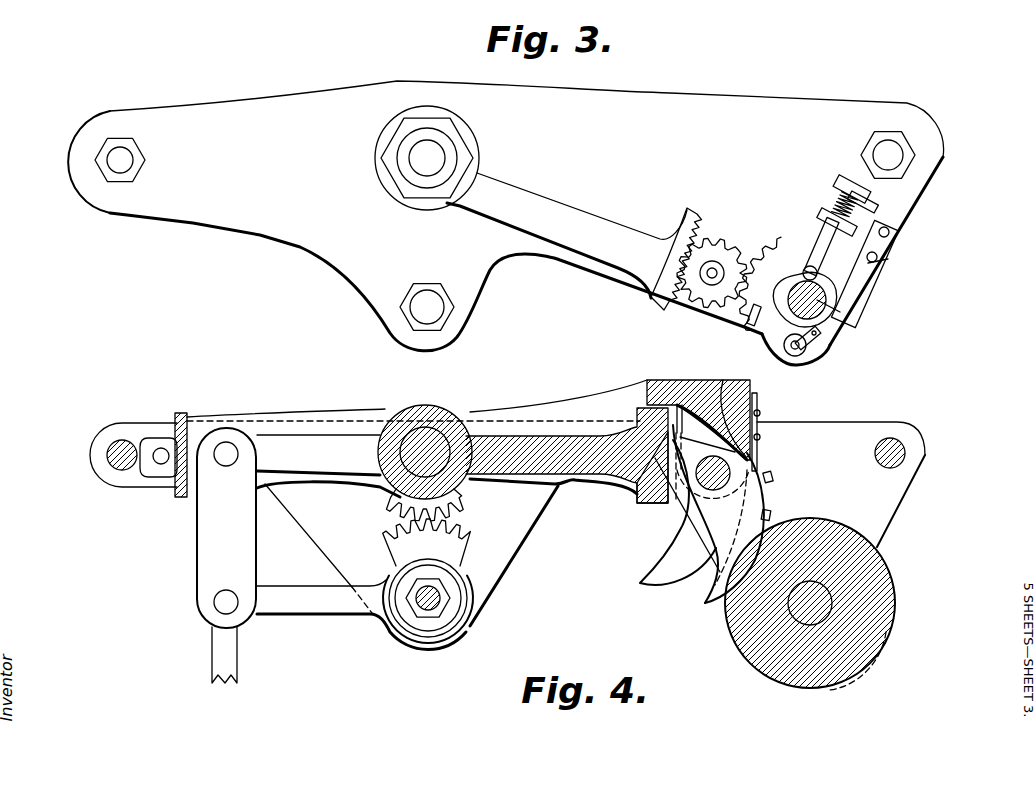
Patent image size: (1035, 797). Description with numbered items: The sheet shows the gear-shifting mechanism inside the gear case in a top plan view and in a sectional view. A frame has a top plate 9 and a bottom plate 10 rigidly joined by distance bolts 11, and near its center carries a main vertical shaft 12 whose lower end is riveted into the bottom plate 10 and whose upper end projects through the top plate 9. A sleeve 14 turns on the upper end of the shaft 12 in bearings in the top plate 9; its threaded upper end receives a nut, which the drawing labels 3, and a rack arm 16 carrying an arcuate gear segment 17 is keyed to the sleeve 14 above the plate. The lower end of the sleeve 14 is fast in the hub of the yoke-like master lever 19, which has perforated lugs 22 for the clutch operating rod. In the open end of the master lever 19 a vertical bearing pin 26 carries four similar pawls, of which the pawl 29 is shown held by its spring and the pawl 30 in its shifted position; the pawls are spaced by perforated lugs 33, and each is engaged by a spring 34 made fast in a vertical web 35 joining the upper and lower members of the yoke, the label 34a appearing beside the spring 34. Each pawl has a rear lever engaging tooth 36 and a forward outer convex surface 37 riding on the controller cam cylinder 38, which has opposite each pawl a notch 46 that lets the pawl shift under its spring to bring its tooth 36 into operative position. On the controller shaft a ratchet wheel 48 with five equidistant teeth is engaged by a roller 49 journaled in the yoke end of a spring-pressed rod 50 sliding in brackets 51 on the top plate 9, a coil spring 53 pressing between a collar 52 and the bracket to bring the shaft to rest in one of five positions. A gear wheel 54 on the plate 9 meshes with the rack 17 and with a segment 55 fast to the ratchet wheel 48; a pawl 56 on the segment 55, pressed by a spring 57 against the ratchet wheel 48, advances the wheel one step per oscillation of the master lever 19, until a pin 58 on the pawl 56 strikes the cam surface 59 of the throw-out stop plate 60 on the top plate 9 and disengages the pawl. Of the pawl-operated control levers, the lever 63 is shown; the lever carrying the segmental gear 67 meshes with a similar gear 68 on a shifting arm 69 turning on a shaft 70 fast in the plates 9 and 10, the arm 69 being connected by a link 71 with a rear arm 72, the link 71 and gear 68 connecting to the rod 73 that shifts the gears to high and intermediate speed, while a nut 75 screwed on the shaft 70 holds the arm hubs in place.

In FIG. 3, the top plate 9 is at (237, 217).
In FIG. 3, the distance bolts 11 is at (118, 165).
In FIG. 4, the distance bolts 11 is at (120, 463).
In FIG. 3, the sleeve 14 is at (410, 138).
In FIG. 3, the nut 3 is at (387, 168).
In FIG. 3, the main vertical shaft 12 is at (440, 155).
In FIG. 4, the main vertical shaft 12 is at (430, 433).
In FIG. 3, the rack arm 16 is at (575, 208).
In FIG. 3, the arcuate gear segment 17 is at (698, 212).
In FIG. 3, the shaft 70 is at (433, 307).
In FIG. 4, the shaft 70 is at (437, 605).
In FIG. 3, the gear wheel 54 is at (722, 246).
In FIG. 3, the ratchet wheel 48 is at (820, 288).
In FIG. 3, the roller 49 is at (811, 266).
In FIG. 3, the collar 52 is at (838, 194).
In FIG. 3, the coil spring 53 is at (877, 206).
In FIG. 3, the brackets 51 is at (860, 197).
In FIG. 3, the spring-pressed rod 50 is at (890, 250).
In FIG. 3, the throw-out stop plate 60 is at (883, 260).
In FIG. 3, the cam surface 59 is at (827, 313).
In FIG. 3, the pin 58 is at (810, 332).
In FIG. 3, the pawl 56 is at (807, 350).
In FIG. 3, the spring 57 is at (820, 368).
In FIG. 3, the segment 55 is at (748, 328).
In FIG. 4, the bottom plate 10 is at (92, 450).
In FIG. 4, the perforated lugs 22 is at (158, 440).
In FIG. 4, the master lever 19 is at (184, 498).
In FIG. 4, the rear arm 72 is at (345, 463).
In FIG. 4, the link 71 is at (205, 548).
In FIG. 4, the rod 73 is at (213, 648).
In FIG. 4, the shifting arm 69 is at (307, 613).
In FIG. 4, the segmental gear 67 is at (458, 507).
In FIG. 4, the gear 68 is at (448, 550).
In FIG. 4, the nut 75 is at (440, 627).
In FIG. 4, the control lever 63 is at (560, 490).
In FIG. 4, the lever engaging tooth 36 is at (672, 433).
In FIG. 4, the vertical web 35 is at (647, 381).
In FIG. 4, the cam face 34a is at (718, 392).
In FIG. 4, the perforated lugs 33 is at (758, 412).
In FIG. 4, the spring 34 is at (758, 433).
In FIG. 4, the vertical bearing pin 26 is at (722, 469).
In FIG. 4, the pawl 29 is at (768, 492).
In FIG. 4, the pawl 30 is at (690, 577).
In FIG. 4, the outer convex surface 37 is at (768, 513).
In FIG. 4, the controller cam cylinder 38 is at (896, 601).
In FIG. 4, the notch 46 is at (884, 634).